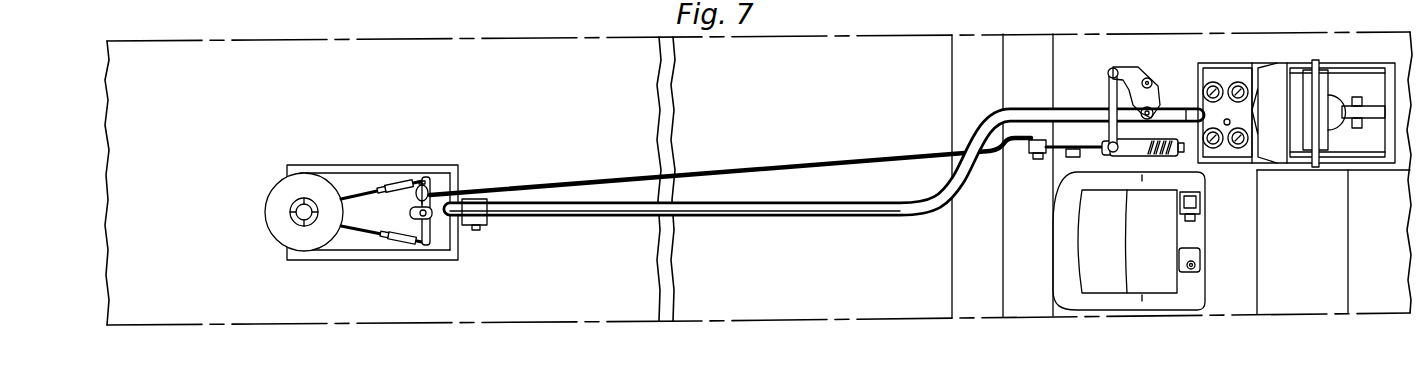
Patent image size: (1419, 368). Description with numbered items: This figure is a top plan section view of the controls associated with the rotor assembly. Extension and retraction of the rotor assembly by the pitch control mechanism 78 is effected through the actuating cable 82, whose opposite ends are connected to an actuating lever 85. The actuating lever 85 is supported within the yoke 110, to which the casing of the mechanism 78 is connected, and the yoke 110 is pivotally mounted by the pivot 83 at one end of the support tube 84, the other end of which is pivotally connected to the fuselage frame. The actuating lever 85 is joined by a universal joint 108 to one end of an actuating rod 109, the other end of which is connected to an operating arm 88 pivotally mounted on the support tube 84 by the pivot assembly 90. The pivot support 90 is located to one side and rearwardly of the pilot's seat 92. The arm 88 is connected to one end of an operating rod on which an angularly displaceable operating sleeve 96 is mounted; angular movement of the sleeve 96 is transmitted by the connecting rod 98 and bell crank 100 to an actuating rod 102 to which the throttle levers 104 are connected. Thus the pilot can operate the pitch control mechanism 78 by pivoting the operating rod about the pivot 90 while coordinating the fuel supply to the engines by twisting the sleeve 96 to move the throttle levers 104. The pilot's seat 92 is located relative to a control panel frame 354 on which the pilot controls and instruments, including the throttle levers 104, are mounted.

The pitch control mechanism 78 is at (268, 176).
The actuating cable 82 is at (350, 193).
The pivot 83 is at (480, 231).
The support tube 84 is at (637, 212).
The actuating lever 85 is at (433, 237).
The operating arm 88 is at (1050, 158).
The pivot assembly 90 is at (1073, 158).
The pilot's seat 92 is at (1212, 258).
The operating sleeve 96 is at (1132, 150).
The connecting rod 98 is at (1108, 97).
The bell crank 100 is at (1130, 70).
The actuating rod 102 is at (1186, 76).
The throttle levers 104 is at (1308, 135).
The universal joint 108 is at (432, 195).
The actuating rod 109 is at (738, 166).
The yoke 110 is at (405, 166).
The control panel frame 354 is at (1260, 70).